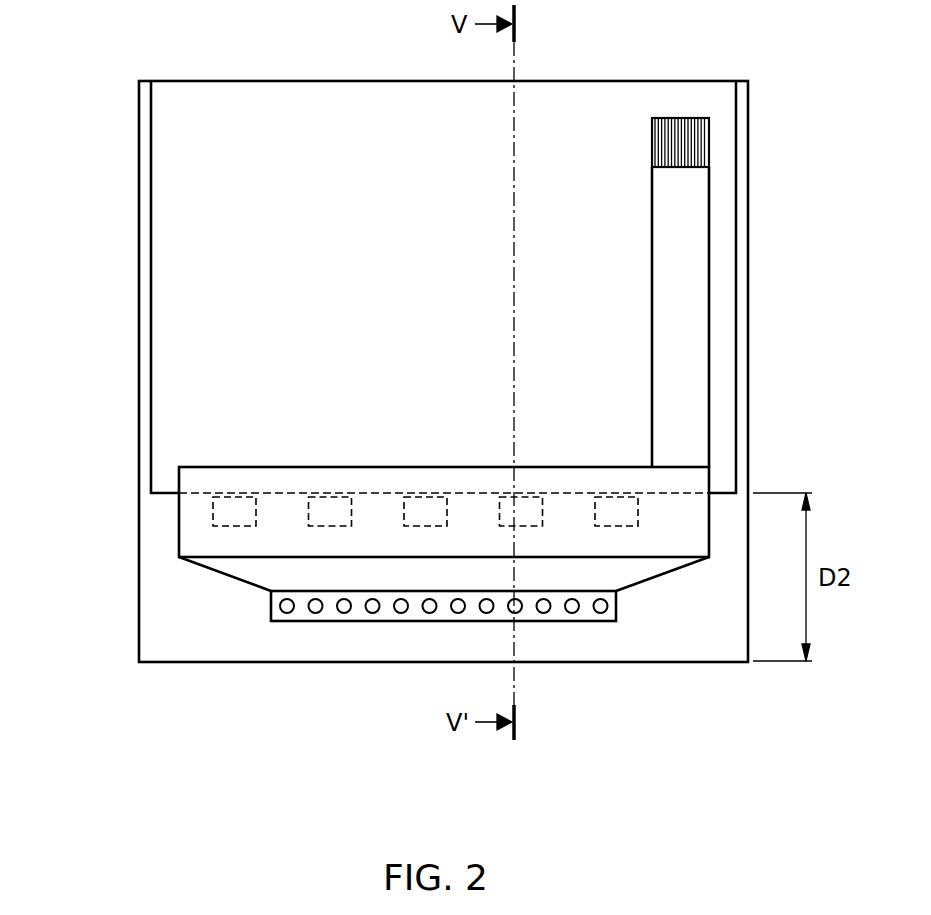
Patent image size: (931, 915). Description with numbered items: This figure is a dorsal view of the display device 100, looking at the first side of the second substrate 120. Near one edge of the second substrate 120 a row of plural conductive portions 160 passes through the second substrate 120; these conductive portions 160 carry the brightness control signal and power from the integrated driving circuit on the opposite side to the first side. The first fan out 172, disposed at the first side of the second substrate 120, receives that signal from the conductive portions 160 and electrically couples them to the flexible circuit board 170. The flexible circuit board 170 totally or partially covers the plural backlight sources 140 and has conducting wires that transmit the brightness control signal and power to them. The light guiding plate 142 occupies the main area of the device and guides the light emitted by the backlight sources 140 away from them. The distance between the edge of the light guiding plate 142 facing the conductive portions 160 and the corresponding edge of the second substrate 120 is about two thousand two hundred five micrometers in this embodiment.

The display device 100 is at (92, 38).
The second substrate 120 is at (388, 642).
The light guiding plate 142 is at (208, 262).
The flexible circuit board 170 is at (200, 538).
The backlight source 140 is at (230, 511).
The first fan out 172 is at (273, 570).
The conductive portion 160 is at (517, 605).